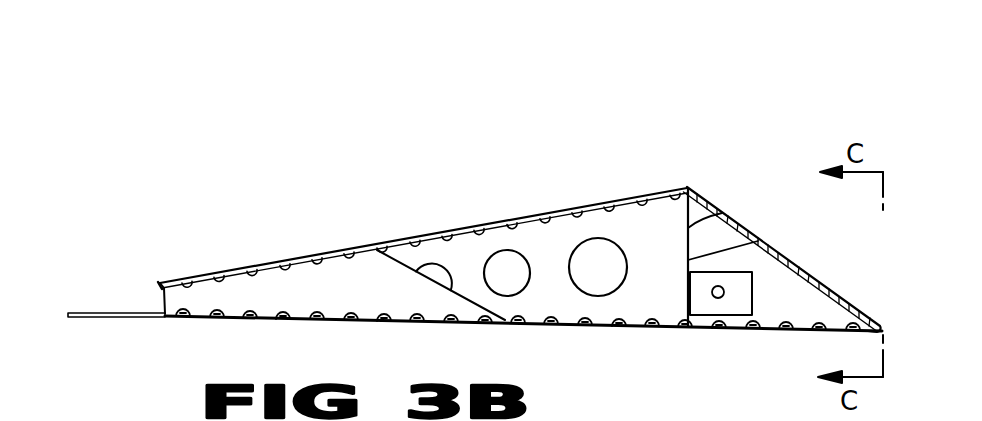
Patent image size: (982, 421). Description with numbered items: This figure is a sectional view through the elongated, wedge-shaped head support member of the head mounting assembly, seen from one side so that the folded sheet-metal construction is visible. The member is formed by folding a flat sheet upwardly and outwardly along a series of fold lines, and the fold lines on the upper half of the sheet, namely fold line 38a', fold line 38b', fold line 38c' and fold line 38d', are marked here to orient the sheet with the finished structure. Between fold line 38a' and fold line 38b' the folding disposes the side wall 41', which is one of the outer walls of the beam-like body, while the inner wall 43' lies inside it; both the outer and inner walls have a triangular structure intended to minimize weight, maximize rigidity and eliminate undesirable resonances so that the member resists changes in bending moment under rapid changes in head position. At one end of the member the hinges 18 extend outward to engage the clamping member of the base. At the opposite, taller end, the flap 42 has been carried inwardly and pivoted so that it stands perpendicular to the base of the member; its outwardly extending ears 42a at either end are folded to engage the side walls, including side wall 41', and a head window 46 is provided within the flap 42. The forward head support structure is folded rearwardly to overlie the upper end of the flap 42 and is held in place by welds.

The hinges 18 is at (124, 321).
The inner wall 43' is at (523, 326).
The fold line 38d' is at (265, 263).
The fold line 38a' is at (423, 218).
The fold line 38c' is at (441, 305).
The side wall 41' is at (555, 301).
The fold line 38b' is at (677, 278).
The flap 42 is at (718, 219).
The head window 46 is at (757, 242).
The ears 42a is at (752, 288).